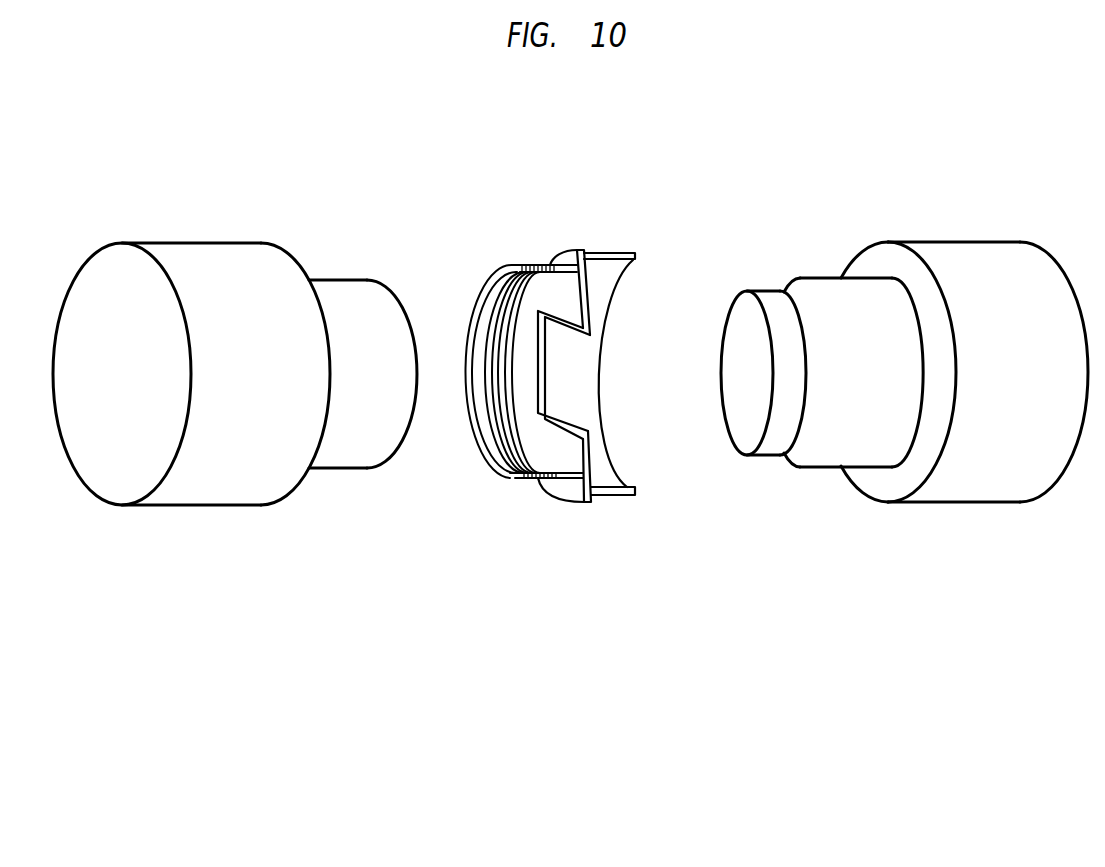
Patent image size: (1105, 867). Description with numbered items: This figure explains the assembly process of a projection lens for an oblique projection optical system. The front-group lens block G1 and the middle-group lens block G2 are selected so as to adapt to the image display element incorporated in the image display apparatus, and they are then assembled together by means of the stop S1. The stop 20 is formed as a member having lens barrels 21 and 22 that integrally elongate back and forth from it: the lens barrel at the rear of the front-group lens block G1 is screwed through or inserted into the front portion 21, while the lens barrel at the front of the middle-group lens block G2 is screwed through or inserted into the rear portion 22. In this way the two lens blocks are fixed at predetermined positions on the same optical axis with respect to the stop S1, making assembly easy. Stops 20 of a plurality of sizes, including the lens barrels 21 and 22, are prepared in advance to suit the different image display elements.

The front-group lens block G1 is at (245, 242).
The middle-group lens block G2 is at (873, 252).
The stop S1 is at (546, 380).
The stop 20 is at (570, 493).
The front portion (lens barrel) 21 is at (537, 483).
The rear portion (lens barrel) 22 is at (615, 497).